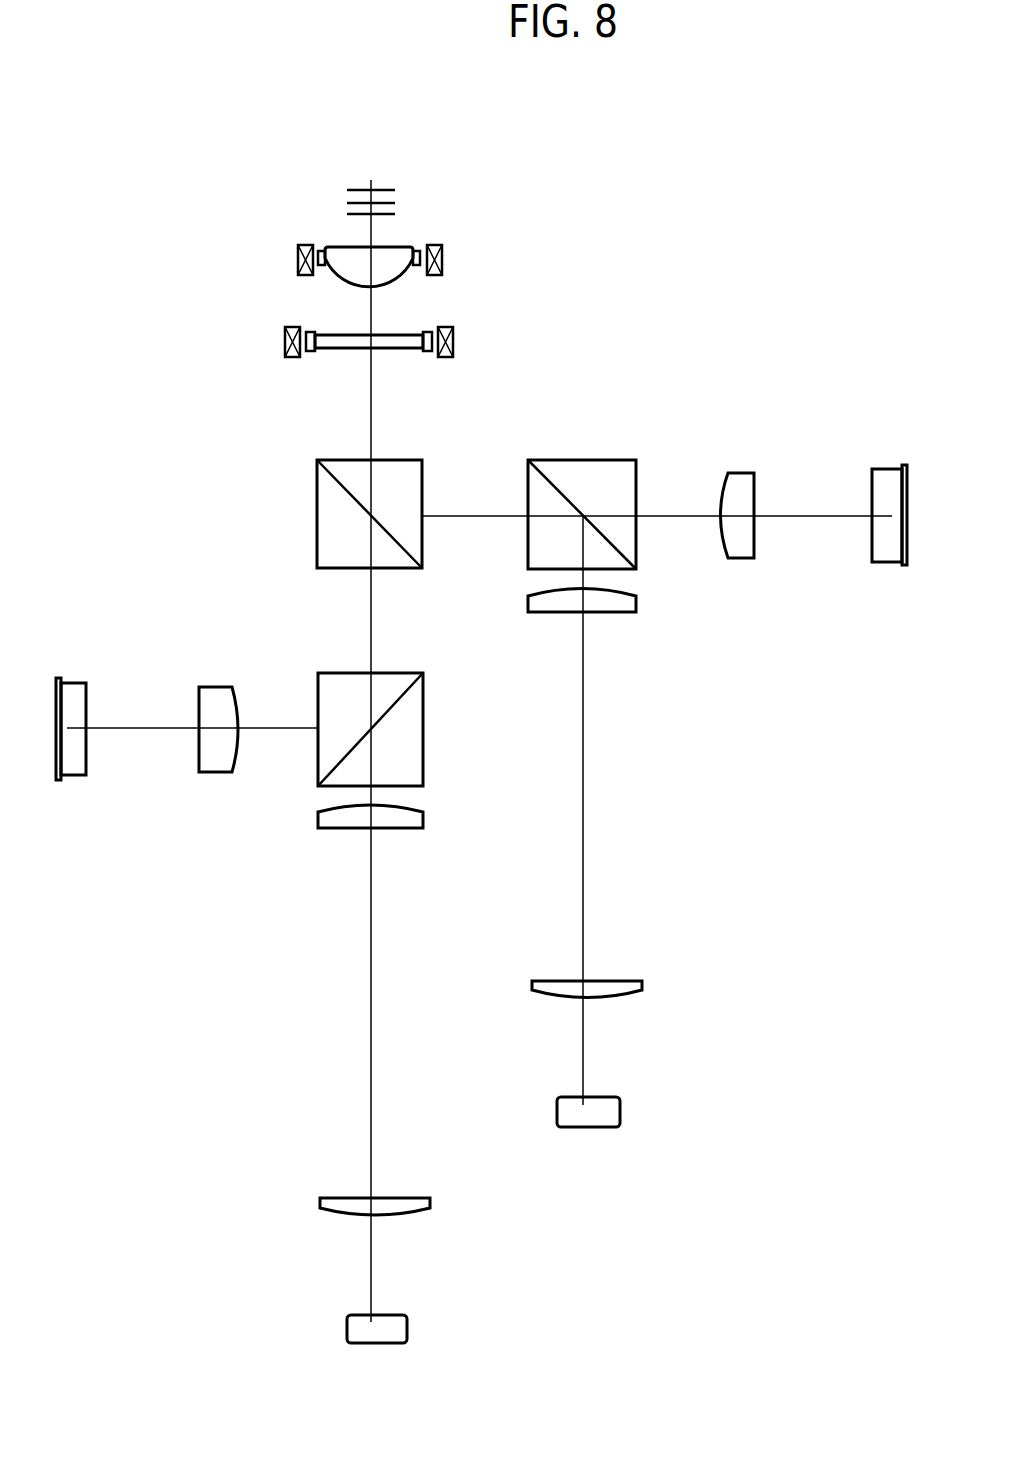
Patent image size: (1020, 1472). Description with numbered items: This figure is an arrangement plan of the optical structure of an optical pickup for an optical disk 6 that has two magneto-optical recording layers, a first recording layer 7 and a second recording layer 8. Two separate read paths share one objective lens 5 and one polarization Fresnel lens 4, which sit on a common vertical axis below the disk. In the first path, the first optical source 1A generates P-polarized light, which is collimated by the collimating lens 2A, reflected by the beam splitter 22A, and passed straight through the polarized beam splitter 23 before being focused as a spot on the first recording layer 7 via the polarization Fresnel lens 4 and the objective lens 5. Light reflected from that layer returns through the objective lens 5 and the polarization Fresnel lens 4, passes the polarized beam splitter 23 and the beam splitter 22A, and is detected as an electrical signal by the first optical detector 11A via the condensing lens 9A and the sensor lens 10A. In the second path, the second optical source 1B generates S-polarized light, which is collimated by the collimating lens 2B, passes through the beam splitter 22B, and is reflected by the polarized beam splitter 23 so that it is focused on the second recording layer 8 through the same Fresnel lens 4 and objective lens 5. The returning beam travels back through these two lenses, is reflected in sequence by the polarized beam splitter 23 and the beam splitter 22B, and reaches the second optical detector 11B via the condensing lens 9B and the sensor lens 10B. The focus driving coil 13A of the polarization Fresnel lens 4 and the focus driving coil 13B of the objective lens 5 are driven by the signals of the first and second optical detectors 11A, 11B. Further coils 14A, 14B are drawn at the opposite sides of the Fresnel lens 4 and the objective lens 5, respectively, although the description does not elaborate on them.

The optical disk 6 is at (349, 172).
The first recording layer 7 is at (390, 197).
The second recording layer 8 is at (392, 213).
The objective lens 5 is at (346, 270).
The focus driving coil 13B is at (422, 256).
The focusing coil 14B is at (444, 258).
The polarization Fresnel lens 4 is at (330, 345).
The focus driving coil 13A is at (433, 336).
The tracking coil 14A is at (455, 346).
The polarized beam splitter 23 is at (317, 533).
The beam splitter 22B is at (571, 460).
The condensing lens 9B is at (625, 608).
The collimating lens 2B is at (742, 553).
The second optical source 1B is at (885, 556).
The beam splitter 22A is at (416, 754).
The condensing lens 9A is at (410, 820).
The collimating lens 2A is at (223, 766).
The first optical source 1A is at (80, 770).
The sensor lens 10B is at (635, 986).
The second optical detector 11B is at (615, 1112).
The sensor lens 10A is at (417, 1200).
The first optical detector 11A is at (403, 1325).